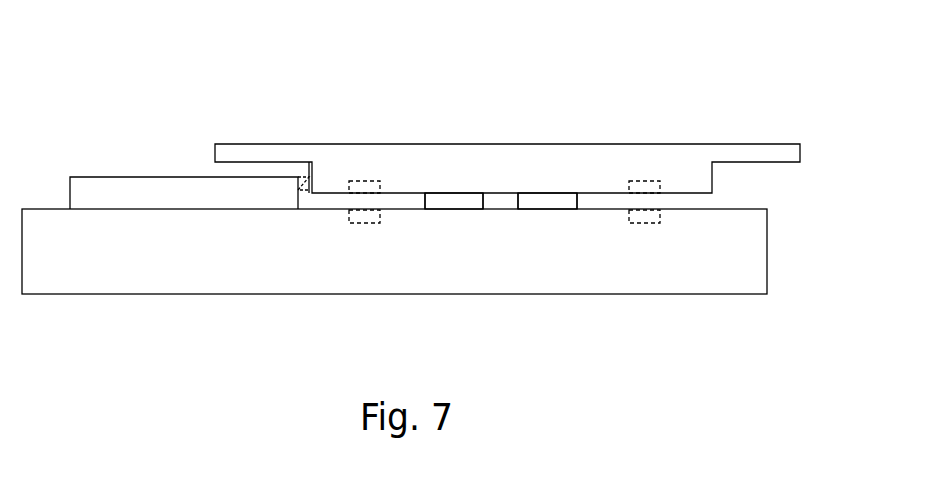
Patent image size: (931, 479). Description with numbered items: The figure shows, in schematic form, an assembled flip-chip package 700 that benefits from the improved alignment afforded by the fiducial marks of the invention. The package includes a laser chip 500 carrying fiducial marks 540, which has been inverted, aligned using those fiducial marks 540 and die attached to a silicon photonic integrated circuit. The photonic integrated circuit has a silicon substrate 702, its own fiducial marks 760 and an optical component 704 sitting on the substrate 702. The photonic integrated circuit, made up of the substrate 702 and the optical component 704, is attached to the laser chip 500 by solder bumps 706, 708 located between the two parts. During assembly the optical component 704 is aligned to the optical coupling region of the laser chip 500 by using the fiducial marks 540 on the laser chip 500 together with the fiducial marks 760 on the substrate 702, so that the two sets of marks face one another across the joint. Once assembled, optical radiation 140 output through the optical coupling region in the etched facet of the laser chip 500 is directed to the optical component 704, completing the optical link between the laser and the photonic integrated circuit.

The flip-chip package 700 is at (155, 66).
The silicon substrate 702 is at (272, 268).
The optical component 704 is at (178, 190).
The laser chip 500 is at (518, 182).
The optical radiation 140 is at (303, 181).
The fiducial marks 540 is at (366, 181).
The fiducial marks 760 is at (358, 223).
The solder bump 706 is at (453, 203).
The solder bump 708 is at (551, 205).